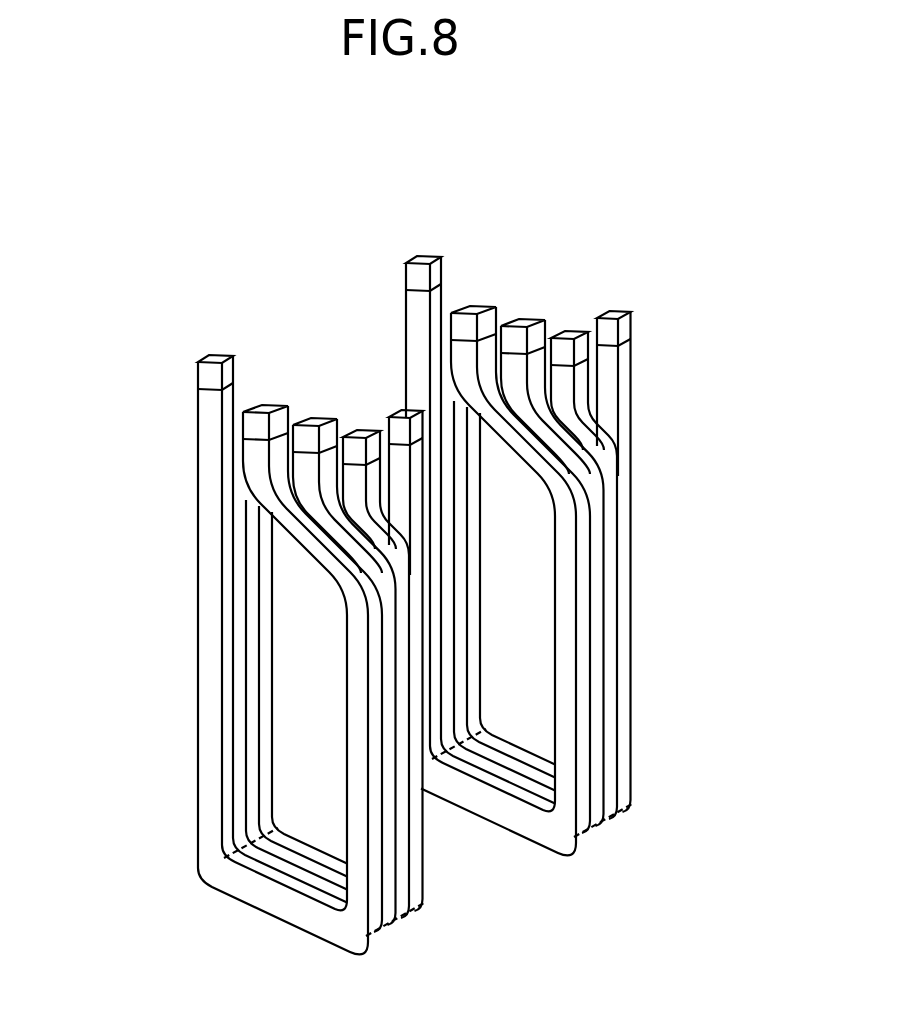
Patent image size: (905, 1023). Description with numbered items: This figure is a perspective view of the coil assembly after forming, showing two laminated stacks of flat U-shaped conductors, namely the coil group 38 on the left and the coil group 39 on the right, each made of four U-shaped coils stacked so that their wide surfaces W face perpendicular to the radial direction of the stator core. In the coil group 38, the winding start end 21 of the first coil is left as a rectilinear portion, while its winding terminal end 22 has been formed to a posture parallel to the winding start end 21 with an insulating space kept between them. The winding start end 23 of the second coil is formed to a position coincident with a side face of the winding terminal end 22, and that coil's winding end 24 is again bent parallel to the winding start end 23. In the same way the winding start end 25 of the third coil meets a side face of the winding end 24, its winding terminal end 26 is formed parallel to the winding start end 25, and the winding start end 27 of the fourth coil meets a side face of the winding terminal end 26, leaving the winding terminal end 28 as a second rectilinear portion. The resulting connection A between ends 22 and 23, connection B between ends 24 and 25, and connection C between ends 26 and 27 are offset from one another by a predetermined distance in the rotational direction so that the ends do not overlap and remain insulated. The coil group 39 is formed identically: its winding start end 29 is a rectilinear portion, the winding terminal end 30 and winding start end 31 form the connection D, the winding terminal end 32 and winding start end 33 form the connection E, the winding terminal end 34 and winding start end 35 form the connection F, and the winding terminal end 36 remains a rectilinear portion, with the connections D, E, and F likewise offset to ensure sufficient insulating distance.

The winding start end 21 is at (200, 366).
The winding terminal end 22 is at (247, 440).
The winding start end 23 is at (258, 405).
The winding end 24 is at (262, 460).
The winding start end 25 is at (315, 418).
The winding terminal end 26 is at (300, 490).
The winding start end 27 is at (360, 430).
The winding terminal end 28 is at (385, 478).
The winding start end 29 is at (422, 253).
The winding terminal end 30 is at (466, 308).
The winding start end 31 is at (492, 312).
The winding terminal end 32 is at (517, 312).
The winding start end 33 is at (598, 316).
The winding terminal end 34 is at (593, 380).
The winding start end 35 is at (593, 357).
The winding terminal end 36 is at (630, 330).
The coil group 38 is at (361, 972).
The coil group 39 is at (562, 872).
The connection A is at (255, 440).
The connection B is at (262, 488).
The connection C is at (335, 500).
The connection D is at (475, 308).
The connection E is at (532, 320).
The connection F is at (592, 330).
The wide surface W is at (205, 786).